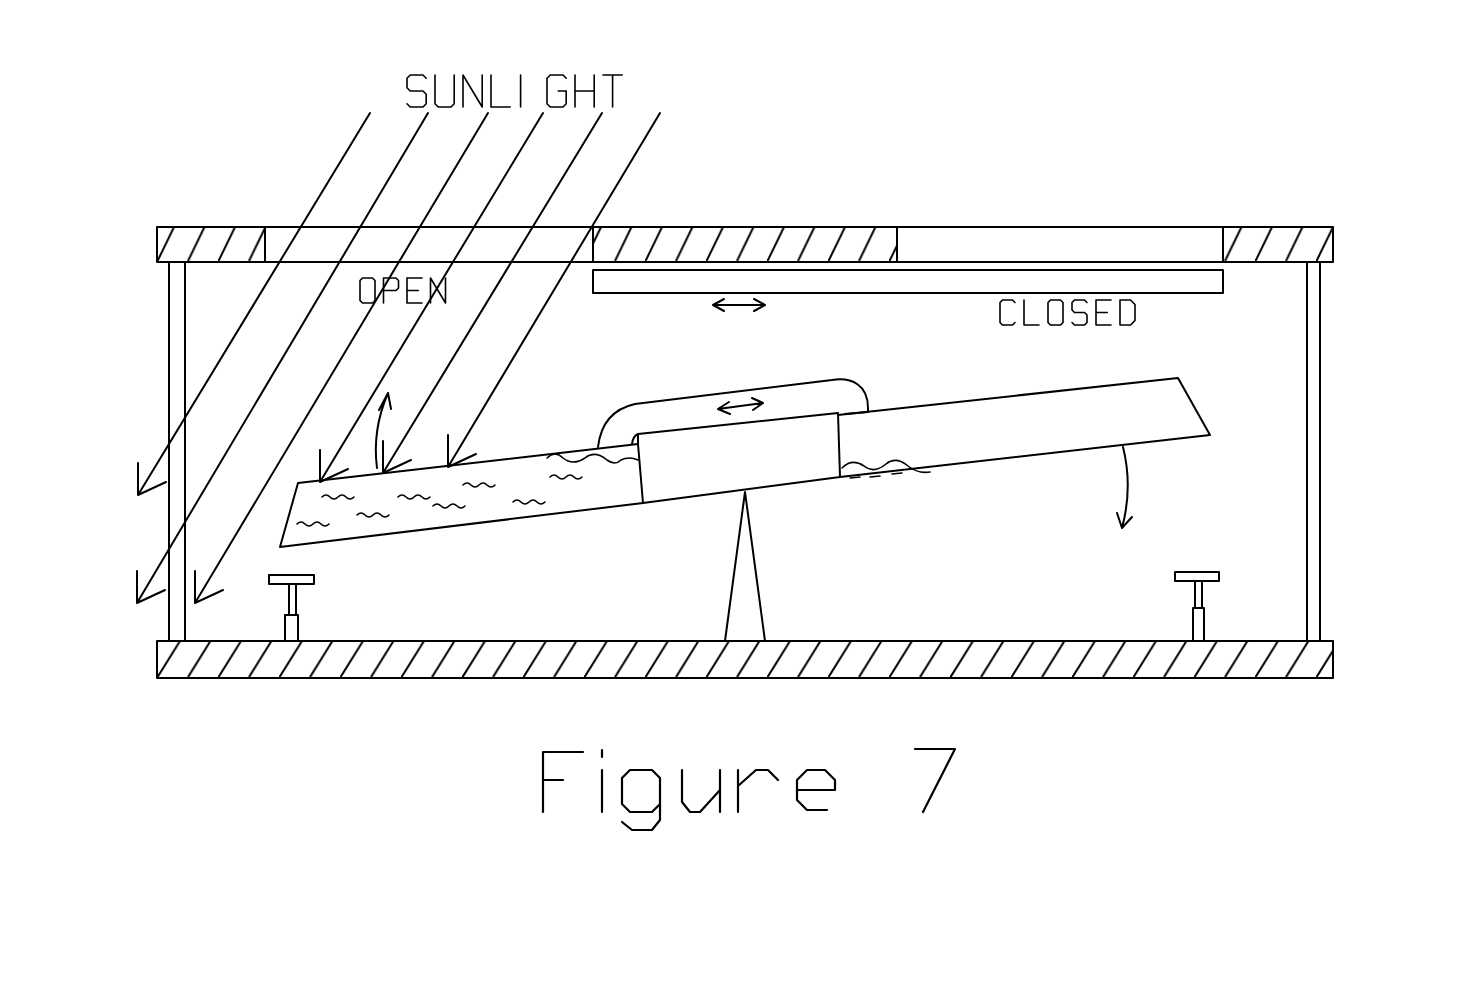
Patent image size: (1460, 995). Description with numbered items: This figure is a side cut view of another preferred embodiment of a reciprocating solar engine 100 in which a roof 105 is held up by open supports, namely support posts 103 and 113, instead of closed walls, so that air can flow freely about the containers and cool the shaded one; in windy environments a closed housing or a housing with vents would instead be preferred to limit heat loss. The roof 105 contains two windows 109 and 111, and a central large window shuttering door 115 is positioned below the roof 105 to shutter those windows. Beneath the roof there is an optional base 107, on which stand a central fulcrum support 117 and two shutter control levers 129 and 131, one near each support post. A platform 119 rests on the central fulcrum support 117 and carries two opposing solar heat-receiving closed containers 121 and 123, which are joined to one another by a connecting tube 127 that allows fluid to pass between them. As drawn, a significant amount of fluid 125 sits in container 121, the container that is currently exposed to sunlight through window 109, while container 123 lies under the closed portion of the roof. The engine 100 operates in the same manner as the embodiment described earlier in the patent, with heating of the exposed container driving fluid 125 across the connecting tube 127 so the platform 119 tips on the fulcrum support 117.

The reciprocating solar engine 100 is at (770, 345).
The support post 103 is at (1375, 451).
The roof 105 is at (743, 225).
The base 107 is at (877, 639).
The window 109 is at (533, 248).
The window 111 is at (1158, 242).
The support post 113 is at (171, 340).
The window shuttering door 115 is at (912, 283).
The central fulcrum support 117 is at (745, 572).
The platform 119 is at (823, 475).
The solar heat-receiving closed container 121 is at (543, 453).
The solar heat-receiving closed container 123 is at (937, 407).
The fluid 125 is at (483, 502).
The connecting tube 127 is at (650, 418).
The shutter control lever 129 is at (297, 595).
The shutter control lever 131 is at (1196, 590).